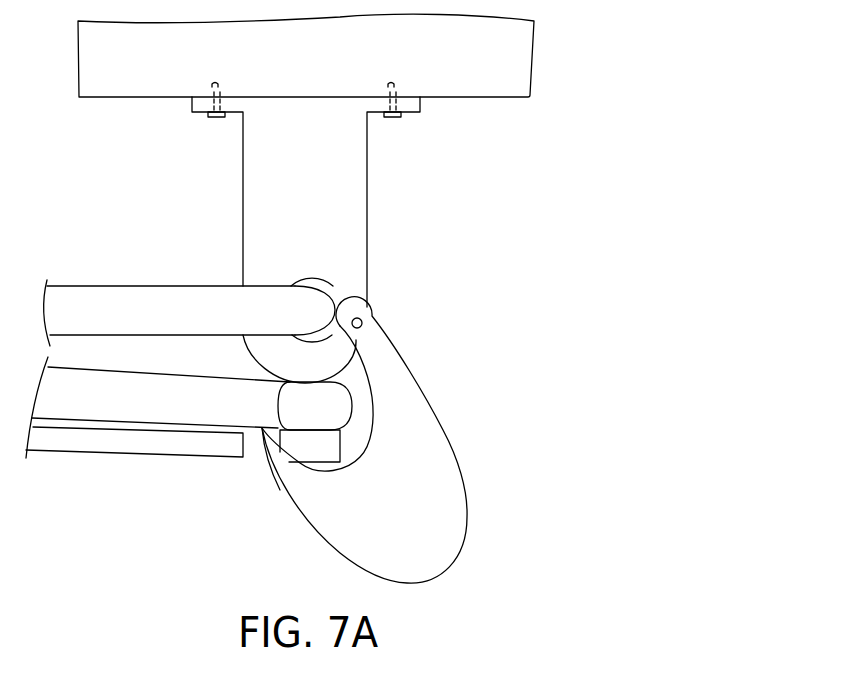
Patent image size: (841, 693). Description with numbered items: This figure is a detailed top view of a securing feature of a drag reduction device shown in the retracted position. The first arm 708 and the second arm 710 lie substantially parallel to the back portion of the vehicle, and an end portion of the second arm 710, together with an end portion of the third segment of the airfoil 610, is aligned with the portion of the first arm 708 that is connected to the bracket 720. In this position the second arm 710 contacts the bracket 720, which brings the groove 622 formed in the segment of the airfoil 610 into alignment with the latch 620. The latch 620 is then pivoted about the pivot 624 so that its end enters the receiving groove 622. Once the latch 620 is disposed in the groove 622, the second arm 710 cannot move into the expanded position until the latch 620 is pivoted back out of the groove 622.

The first arm 708 is at (135, 297).
The bracket 720 is at (358, 160).
The pivot 624 is at (362, 320).
The latch 620 is at (440, 473).
The groove 622 is at (250, 453).
The second arm 710 is at (135, 415).
The airfoil 610 is at (190, 445).